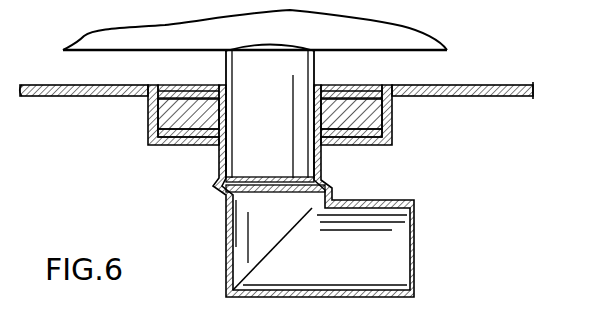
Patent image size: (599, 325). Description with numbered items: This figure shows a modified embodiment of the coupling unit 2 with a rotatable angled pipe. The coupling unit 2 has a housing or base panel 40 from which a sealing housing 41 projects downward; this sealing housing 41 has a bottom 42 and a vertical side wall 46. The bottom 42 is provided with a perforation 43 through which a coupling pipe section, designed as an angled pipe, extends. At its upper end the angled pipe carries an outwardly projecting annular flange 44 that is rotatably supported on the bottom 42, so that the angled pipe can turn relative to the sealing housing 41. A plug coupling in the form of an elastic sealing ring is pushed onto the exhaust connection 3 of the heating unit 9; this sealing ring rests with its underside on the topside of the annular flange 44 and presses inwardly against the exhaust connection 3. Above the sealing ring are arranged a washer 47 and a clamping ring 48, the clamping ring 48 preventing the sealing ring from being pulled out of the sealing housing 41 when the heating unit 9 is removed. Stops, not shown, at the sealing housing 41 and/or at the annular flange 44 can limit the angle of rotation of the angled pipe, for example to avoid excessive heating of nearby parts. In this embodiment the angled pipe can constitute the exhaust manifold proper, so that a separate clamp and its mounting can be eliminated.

The heating unit 9 is at (427, 39).
The exhaust connection 3 is at (287, 64).
The housing or base panel 40 is at (56, 97).
The coupling unit 2 is at (120, 143).
The bottom 42 is at (154, 146).
The sealing housing 41 is at (389, 146).
The clamping ring 48 is at (163, 86).
The washer 47 is at (194, 92).
The vertical side wall 46 is at (392, 120).
The perforation 43 is at (210, 146).
The annular flange 44 is at (348, 145).